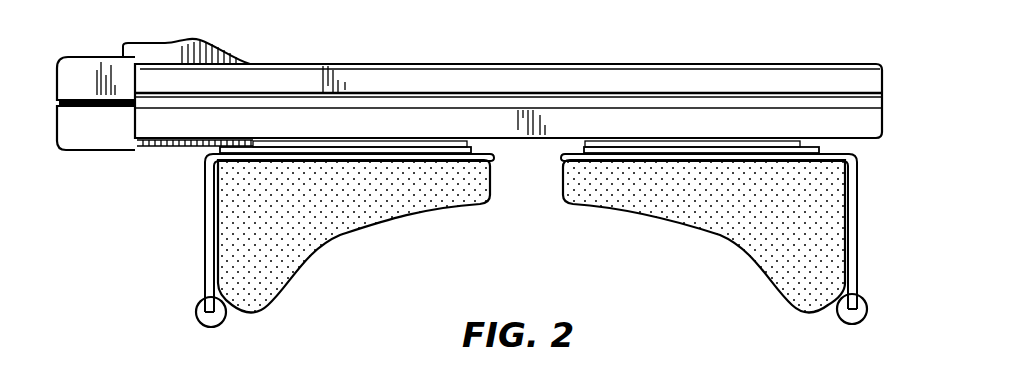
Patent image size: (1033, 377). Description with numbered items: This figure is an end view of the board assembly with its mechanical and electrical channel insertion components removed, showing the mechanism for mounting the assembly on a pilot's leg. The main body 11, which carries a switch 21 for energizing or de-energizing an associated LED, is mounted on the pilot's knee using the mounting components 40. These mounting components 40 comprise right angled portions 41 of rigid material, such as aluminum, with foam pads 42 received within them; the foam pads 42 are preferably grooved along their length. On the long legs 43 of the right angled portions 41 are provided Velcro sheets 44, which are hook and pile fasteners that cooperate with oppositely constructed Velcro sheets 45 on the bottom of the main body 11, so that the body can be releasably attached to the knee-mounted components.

The main body 11 is at (87, 140).
The switch 21 is at (131, 49).
The mounting components 40 is at (586, 241).
The right angled portions 41 is at (206, 205).
The foam pads 42 is at (318, 238).
The long legs 43 is at (808, 158).
The Velcro sheets 44 is at (435, 148).
The Velcro sheets 45 is at (312, 140).